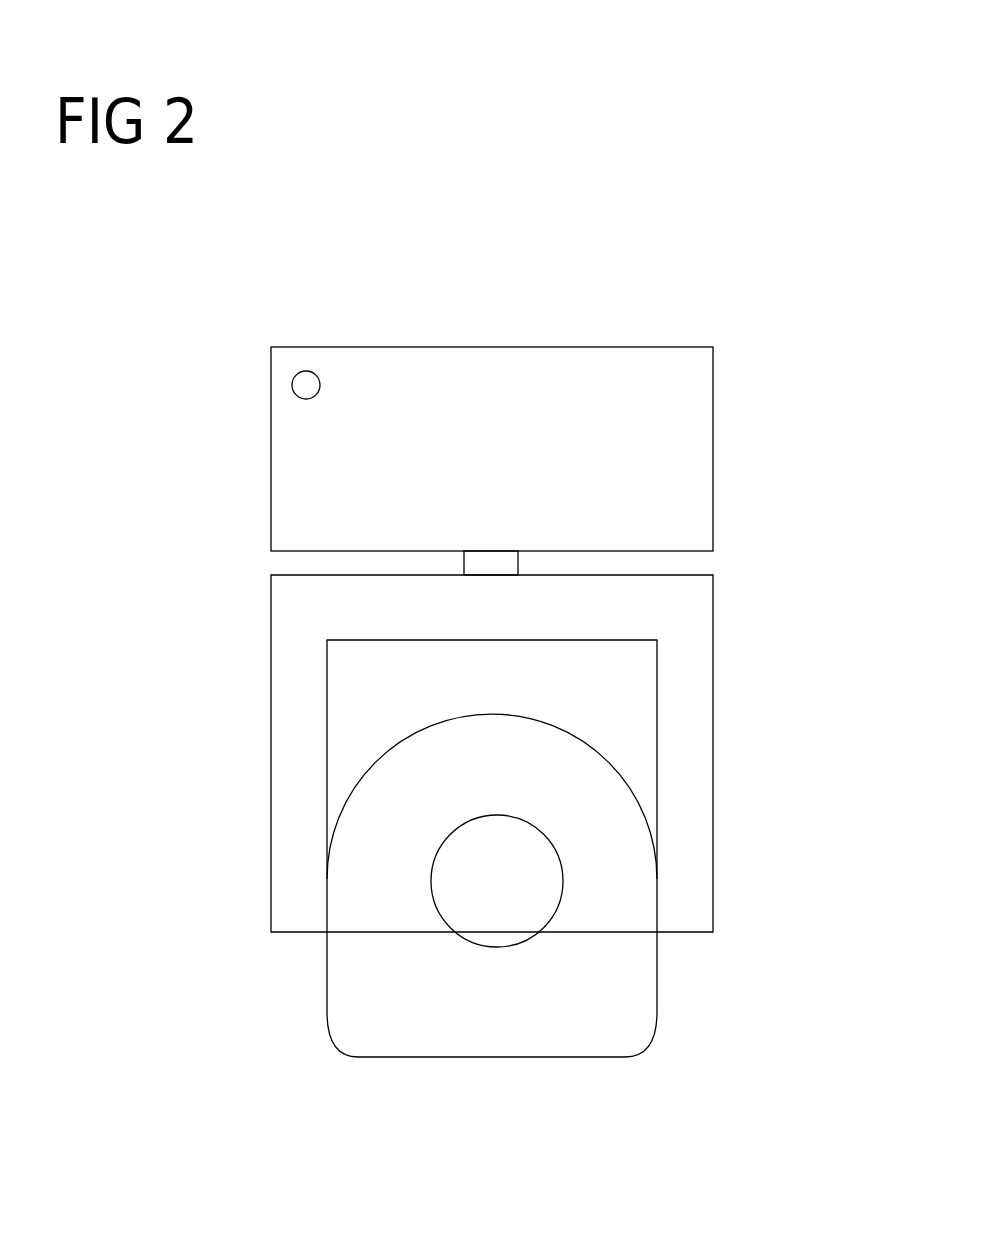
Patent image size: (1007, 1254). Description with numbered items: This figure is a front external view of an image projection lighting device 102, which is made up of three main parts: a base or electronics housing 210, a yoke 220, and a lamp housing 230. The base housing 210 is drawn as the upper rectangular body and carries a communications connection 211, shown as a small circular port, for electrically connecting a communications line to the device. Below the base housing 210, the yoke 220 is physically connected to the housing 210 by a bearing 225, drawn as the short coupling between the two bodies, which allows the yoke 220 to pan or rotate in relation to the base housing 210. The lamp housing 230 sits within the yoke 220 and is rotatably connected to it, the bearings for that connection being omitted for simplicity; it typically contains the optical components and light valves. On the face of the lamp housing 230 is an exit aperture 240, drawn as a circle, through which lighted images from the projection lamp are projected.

The image projection lighting device 102 is at (805, 423).
The base or electronics housing 210 is at (335, 332).
The communications connection 211 is at (285, 392).
The yoke 220 is at (248, 767).
The bearing 225 is at (490, 557).
The lamp housing 230 is at (618, 750).
The exit aperture 240 is at (577, 869).